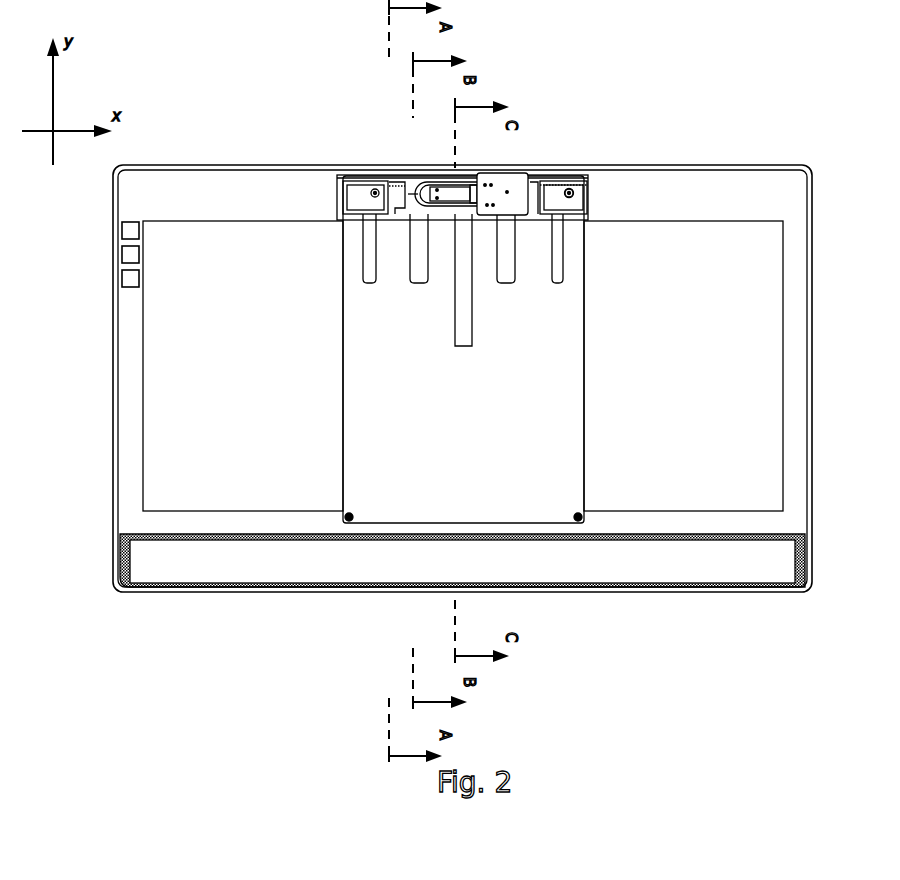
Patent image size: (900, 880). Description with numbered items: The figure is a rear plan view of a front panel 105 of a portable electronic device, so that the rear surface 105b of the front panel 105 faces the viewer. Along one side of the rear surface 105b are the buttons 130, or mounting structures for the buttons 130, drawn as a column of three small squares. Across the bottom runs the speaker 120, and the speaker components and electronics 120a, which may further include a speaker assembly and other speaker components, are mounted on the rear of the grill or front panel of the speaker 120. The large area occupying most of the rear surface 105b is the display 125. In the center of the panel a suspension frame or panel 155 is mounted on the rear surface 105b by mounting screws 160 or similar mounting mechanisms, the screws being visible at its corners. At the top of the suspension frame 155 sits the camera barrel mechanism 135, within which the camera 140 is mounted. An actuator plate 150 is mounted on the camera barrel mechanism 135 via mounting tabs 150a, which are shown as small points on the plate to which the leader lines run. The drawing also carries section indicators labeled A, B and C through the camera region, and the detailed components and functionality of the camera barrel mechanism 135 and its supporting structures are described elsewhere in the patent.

The front panel 105 is at (812, 222).
The rear surface 105b is at (759, 191).
The speaker 120 is at (818, 532).
The speaker components and electronics 120a is at (741, 558).
The display 125 is at (683, 366).
The buttons 130 is at (100, 219).
The camera barrel mechanism 135 is at (428, 174).
The camera 140 is at (447, 185).
The actuator plate 150 is at (520, 200).
The mounting tabs 150a is at (510, 192).
The suspension frame 155 is at (463, 349).
The mounting screws 160 is at (574, 192).